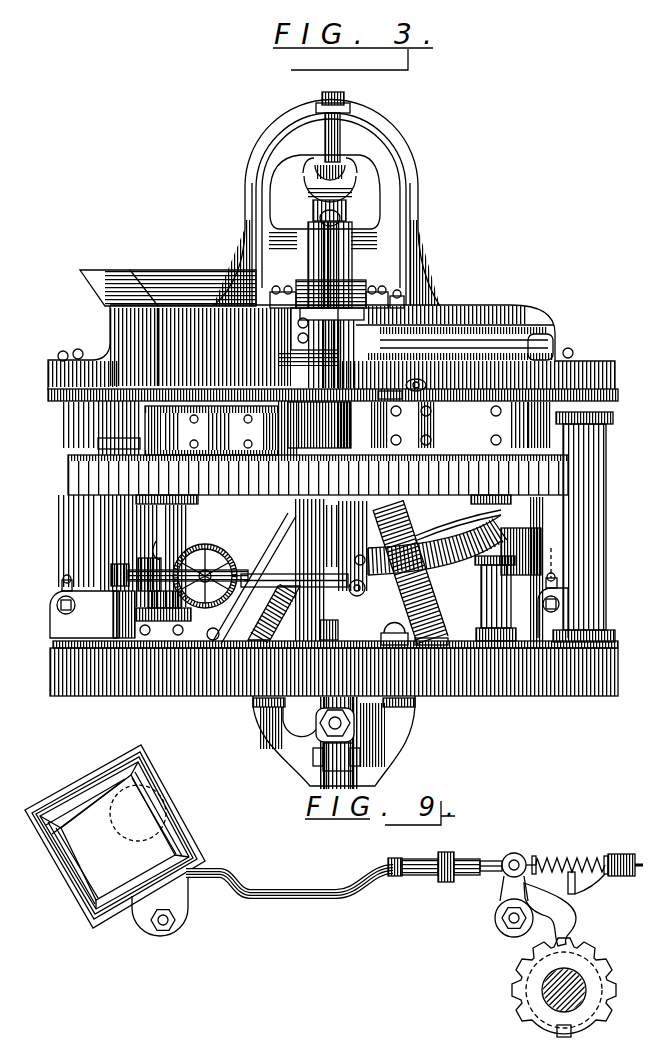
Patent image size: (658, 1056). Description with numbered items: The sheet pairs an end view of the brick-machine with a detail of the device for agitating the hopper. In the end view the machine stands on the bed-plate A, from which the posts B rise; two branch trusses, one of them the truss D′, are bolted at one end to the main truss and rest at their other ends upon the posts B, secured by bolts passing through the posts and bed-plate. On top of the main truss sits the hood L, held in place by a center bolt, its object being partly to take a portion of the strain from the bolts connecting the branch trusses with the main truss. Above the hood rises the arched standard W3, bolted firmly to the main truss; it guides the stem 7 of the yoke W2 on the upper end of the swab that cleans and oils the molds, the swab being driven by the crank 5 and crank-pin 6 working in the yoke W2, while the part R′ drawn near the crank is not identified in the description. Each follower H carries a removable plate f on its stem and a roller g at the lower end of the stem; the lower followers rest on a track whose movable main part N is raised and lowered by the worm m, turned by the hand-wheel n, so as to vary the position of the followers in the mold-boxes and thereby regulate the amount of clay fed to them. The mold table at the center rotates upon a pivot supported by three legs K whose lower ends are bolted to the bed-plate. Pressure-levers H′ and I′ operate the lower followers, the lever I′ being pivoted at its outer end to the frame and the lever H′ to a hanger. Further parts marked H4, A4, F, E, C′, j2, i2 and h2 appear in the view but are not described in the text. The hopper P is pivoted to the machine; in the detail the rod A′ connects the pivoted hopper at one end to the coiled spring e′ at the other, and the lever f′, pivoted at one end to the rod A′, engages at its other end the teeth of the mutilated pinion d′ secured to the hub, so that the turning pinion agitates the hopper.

In FIG. 3, the hopper P is at (120, 318).
In FIG. 9, the hopper P is at (111, 840).
In FIG. 3, the yoke W2 is at (305, 158).
In FIG. 3, the arched standard W3 is at (392, 149).
In FIG. 3, the stem 7 is at (320, 137).
In FIG. 3, the ball bearing cup R′ is at (300, 178).
In FIG. 3, the crank 5 is at (336, 181).
In FIG. 3, the crank-pin 6 is at (334, 206).
In FIG. 3, the hood L is at (352, 268).
In FIG. 3, the branch truss D′ is at (445, 321).
In FIG. 3, the removable plate f is at (396, 378).
In FIG. 3, the cross piece H4 is at (433, 410).
In FIG. 3, the pillar A4 is at (470, 418).
In FIG. 3, the beam F is at (198, 430).
In FIG. 3, the gear ring E is at (222, 489).
In FIG. 3, the posts B is at (336, 527).
In FIG. 3, the follower H is at (253, 579).
In FIG. 3, the worm-screw m is at (136, 560).
In FIG. 3, the roller g is at (146, 540).
In FIG. 3, the movable track part N is at (212, 550).
In FIG. 3, the hand-wheel n is at (228, 566).
In FIG. 3, the bracket C′ is at (84, 614).
In FIG. 3, the pin j2 is at (54, 578).
In FIG. 3, the eye i2 is at (48, 594).
In FIG. 3, the bracket h2 is at (45, 608).
In FIG. 3, the legs K is at (374, 614).
In FIG. 3, the pressure-lever I′ is at (445, 562).
In FIG. 3, the bed-plate A is at (334, 668).
In FIG. 3, the pressure-lever H′ is at (350, 748).
In FIG. 9, the rod A′ is at (356, 873).
In FIG. 9, the lever f′ is at (530, 913).
In FIG. 9, the coiled spring e′ is at (565, 864).
In FIG. 9, the mutilated pinion d′ is at (584, 950).